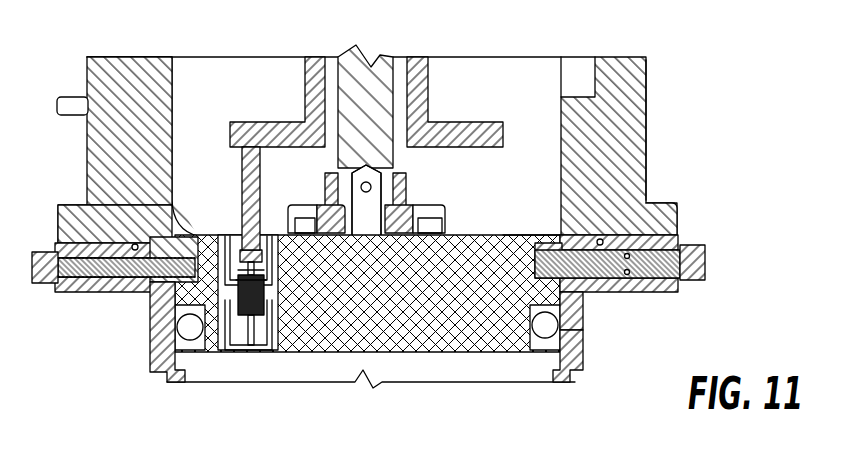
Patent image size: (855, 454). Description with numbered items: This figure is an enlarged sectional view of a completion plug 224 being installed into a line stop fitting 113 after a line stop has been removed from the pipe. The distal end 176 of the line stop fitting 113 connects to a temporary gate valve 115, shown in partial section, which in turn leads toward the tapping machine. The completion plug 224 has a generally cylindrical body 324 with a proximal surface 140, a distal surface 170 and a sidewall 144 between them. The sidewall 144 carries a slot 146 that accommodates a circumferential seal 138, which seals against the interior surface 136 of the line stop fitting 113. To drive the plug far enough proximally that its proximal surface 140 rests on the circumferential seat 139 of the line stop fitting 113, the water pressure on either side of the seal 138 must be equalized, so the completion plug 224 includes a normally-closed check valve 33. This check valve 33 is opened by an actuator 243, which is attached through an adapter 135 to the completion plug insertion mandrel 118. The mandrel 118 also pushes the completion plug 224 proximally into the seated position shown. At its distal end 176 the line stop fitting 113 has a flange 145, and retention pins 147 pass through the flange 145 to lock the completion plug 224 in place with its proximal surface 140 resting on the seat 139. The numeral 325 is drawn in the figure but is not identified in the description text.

The check valve 33 is at (216, 296).
The line stop fitting 113 is at (614, 337).
The temporary gate valve 115 is at (647, 127).
The completion plug insertion mandrel 118 is at (378, 72).
The adapter 135 is at (430, 78).
The interior surface 136 is at (172, 292).
The circumferential seal 138 is at (583, 358).
The circumferential seat 139 is at (174, 384).
The proximal surface 140 is at (307, 360).
The sidewall 144 is at (584, 305).
The flange 145 is at (634, 286).
The slot 146 is at (534, 309).
The retention pins 147 is at (637, 251).
The distal surface 170 is at (87, 204).
The distal end 176 is at (649, 204).
The completion plug 224 is at (532, 229).
The actuator 243 is at (240, 183).
The cylindrical body 324 is at (545, 112).
The seal 325 is at (405, 203).